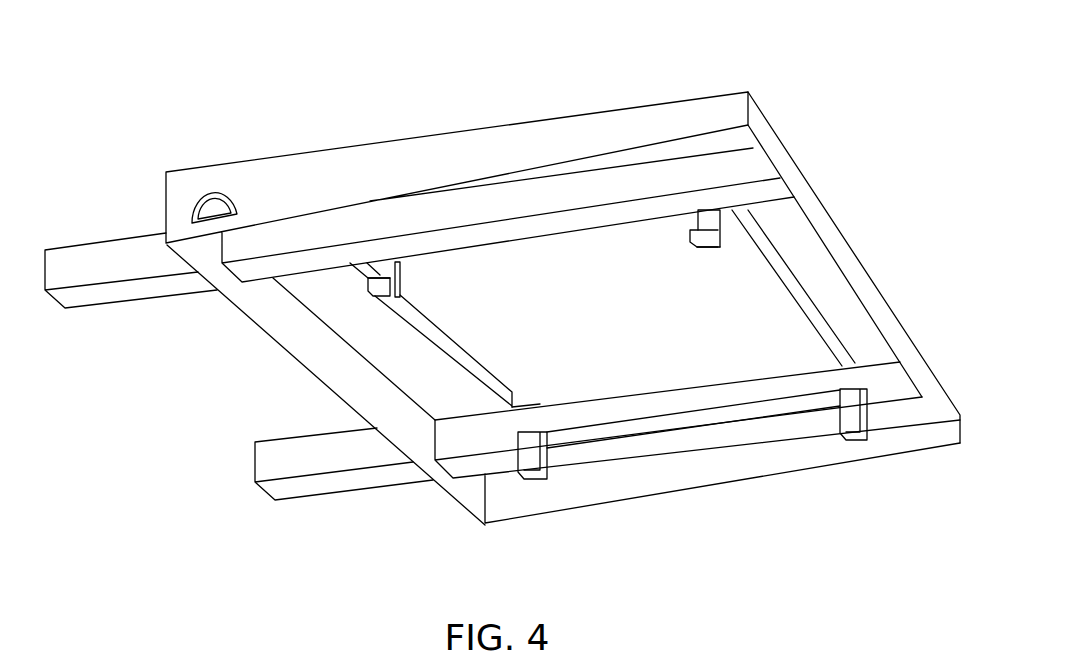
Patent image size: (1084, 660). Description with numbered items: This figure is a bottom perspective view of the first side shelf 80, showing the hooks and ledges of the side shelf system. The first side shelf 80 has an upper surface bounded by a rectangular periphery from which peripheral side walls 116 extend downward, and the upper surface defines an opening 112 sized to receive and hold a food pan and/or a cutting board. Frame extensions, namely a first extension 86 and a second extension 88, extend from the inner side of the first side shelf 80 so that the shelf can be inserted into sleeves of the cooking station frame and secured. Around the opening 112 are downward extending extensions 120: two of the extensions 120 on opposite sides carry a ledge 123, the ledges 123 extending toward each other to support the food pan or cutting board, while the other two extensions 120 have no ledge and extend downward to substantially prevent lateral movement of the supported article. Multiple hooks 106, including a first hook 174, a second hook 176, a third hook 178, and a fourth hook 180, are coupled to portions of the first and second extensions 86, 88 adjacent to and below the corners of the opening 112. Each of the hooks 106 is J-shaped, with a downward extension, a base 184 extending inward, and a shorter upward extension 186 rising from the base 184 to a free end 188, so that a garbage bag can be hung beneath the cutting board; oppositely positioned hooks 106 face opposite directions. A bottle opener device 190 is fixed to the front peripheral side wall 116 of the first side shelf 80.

The first side shelf 80 is at (814, 124).
The first extension 86 is at (316, 283).
The second extension 88 is at (668, 462).
The hooks 106 is at (688, 245).
The opening 112 is at (441, 322).
The peripheral side walls 116 is at (379, 157).
The extensions 120 is at (487, 370).
The ledge 123 is at (762, 398).
The first hook 174 is at (740, 233).
The second hook 176 is at (414, 278).
The third hook 178 is at (871, 414).
The fourth hook 180 is at (557, 461).
The base 184 is at (383, 297).
The upward extension 186 is at (684, 230).
The free end 188 is at (362, 280).
The bottle opener device 190 is at (237, 187).